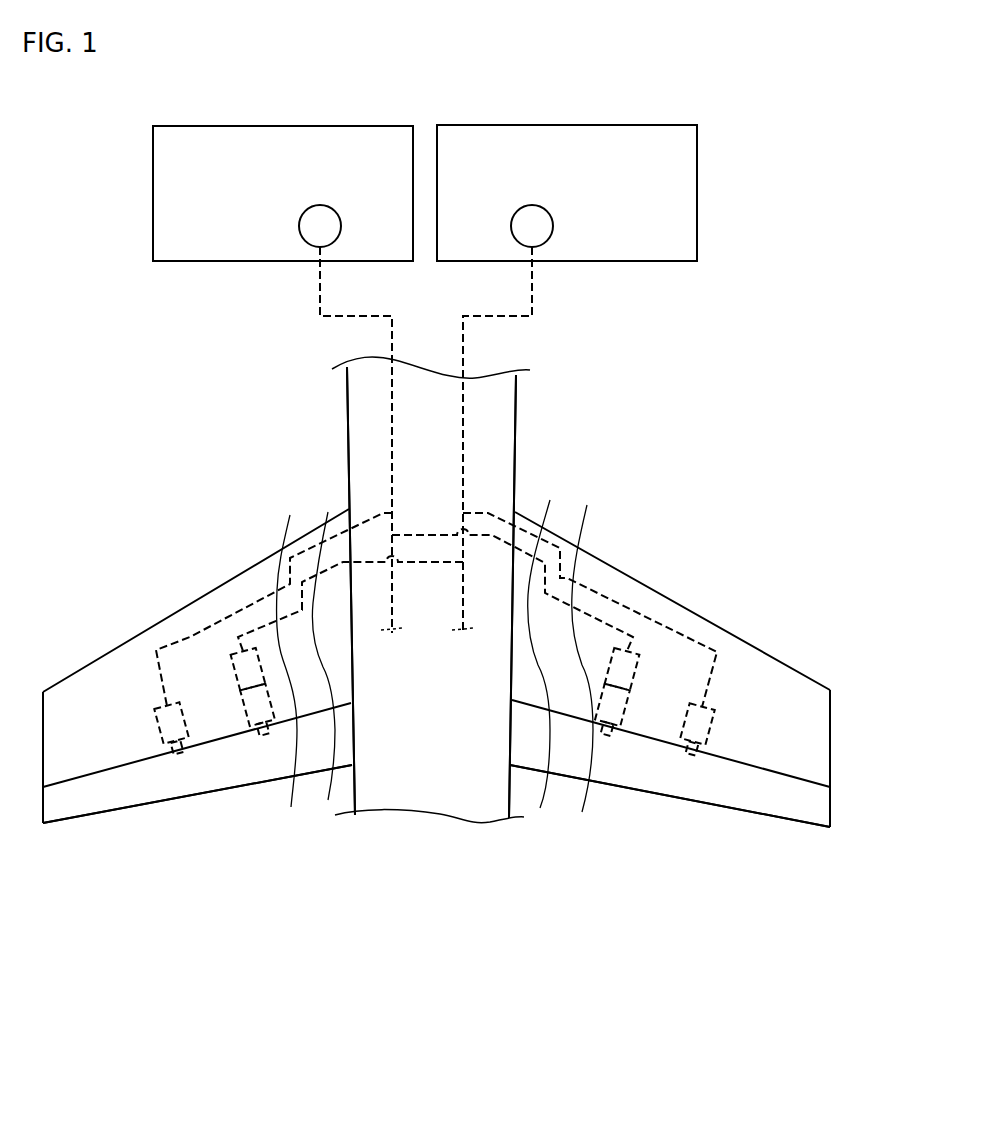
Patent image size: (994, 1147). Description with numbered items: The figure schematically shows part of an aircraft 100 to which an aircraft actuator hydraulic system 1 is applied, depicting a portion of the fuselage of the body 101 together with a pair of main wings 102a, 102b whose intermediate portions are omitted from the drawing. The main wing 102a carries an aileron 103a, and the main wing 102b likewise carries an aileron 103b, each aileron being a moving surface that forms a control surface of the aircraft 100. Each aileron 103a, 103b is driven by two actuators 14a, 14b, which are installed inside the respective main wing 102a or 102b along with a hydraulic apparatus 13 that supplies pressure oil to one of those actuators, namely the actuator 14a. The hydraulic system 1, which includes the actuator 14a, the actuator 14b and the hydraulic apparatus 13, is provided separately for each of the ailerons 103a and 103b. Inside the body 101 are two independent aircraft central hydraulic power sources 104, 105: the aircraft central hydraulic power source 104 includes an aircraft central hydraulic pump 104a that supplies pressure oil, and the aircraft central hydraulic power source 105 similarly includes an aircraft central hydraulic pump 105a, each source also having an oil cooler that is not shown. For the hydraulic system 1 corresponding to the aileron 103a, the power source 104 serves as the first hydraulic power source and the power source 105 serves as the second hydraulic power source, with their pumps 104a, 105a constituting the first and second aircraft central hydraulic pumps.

The aircraft actuator hydraulic system 1 is at (318, 980).
The hydraulic apparatus 13 is at (237, 670).
The actuator 14a is at (252, 714).
The actuator 14b is at (172, 730).
The aircraft 100 is at (558, 410).
The body 101 is at (500, 468).
The main wing 102a is at (770, 738).
The main wing 102b is at (132, 667).
The aileron 103a is at (745, 797).
The aileron 103b is at (98, 797).
The aircraft central hydraulic power source 104 is at (313, 126).
The aircraft central hydraulic pump 104a is at (299, 226).
The aircraft central hydraulic power source 105 is at (525, 125).
The aircraft central hydraulic pump 105a is at (553, 224).